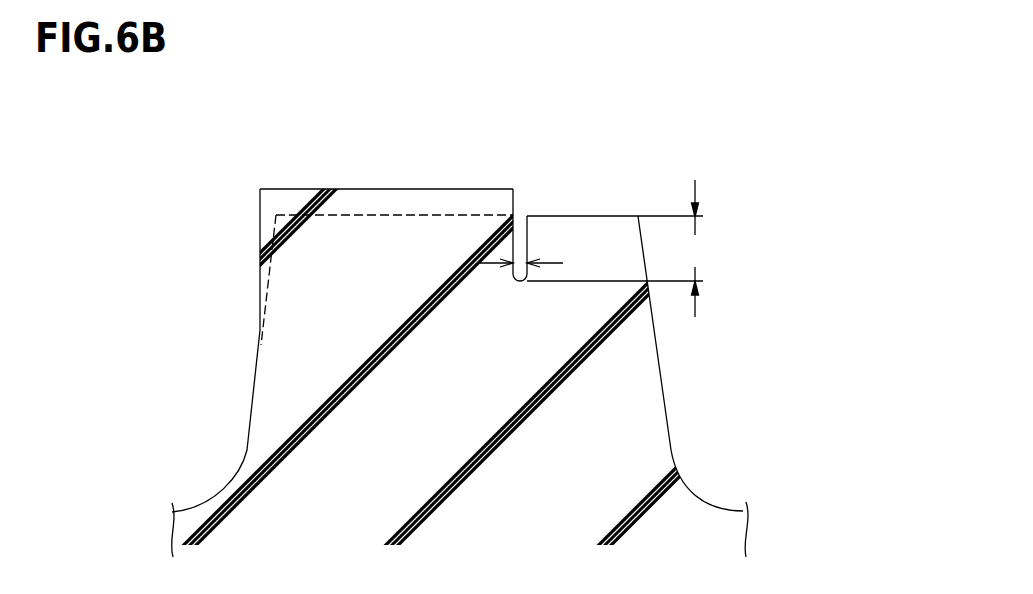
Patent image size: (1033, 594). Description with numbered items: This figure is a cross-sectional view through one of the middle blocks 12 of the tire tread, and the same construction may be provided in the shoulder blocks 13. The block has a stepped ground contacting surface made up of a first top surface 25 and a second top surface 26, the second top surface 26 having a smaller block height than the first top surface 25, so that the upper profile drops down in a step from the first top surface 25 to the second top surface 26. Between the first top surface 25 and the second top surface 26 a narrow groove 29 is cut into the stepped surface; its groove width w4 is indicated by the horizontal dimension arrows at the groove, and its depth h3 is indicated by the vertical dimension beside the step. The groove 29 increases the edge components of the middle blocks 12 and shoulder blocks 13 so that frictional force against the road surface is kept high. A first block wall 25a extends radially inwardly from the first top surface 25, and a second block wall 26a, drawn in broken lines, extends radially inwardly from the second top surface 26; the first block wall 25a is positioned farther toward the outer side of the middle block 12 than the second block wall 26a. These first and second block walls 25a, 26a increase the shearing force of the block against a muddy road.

The middle block 12 is at (501, 316).
The shoulder block 13 is at (290, 182).
The first top surface 25 is at (385, 188).
The first block wall 25a is at (260, 223).
The second top surface 26 is at (590, 215).
The second block wall 26a is at (270, 278).
The groove 29 is at (521, 216).
The groove width w4 is at (519, 270).
The depth h3 is at (694, 248).